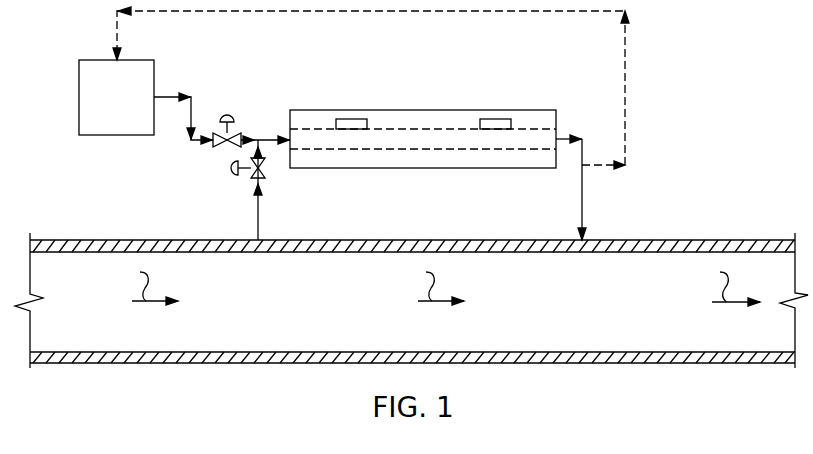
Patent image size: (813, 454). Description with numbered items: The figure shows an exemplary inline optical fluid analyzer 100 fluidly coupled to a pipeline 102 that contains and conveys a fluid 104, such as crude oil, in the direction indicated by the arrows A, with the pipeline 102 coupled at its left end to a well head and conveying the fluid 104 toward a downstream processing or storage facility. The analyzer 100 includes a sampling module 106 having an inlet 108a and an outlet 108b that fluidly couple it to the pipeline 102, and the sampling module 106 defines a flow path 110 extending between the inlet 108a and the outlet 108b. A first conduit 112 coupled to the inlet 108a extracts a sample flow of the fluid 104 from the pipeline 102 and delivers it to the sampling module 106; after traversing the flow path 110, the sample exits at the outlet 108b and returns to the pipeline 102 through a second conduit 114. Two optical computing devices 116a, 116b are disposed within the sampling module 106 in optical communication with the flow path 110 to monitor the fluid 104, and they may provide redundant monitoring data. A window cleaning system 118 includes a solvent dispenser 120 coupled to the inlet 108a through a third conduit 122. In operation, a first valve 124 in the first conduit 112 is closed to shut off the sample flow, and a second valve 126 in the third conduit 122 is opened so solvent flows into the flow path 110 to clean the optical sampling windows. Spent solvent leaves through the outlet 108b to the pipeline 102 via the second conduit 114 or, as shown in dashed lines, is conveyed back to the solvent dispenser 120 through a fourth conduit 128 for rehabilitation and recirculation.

The inline optical fluid analyzer 100 is at (651, 121).
The pipeline 102 is at (690, 240).
The fluid 104 is at (272, 304).
The sampling module 106 is at (461, 110).
The inlet 108a is at (289, 135).
The outlet 108b is at (558, 132).
The flow path 110 is at (430, 150).
The first conduit 112 is at (257, 207).
The second conduit 114 is at (582, 196).
The first optical computing device 116a is at (367, 124).
The second optical computing device 116b is at (511, 124).
The window cleaning system 118 is at (223, 81).
The solvent dispenser 120 is at (101, 108).
The third conduit 122 is at (173, 95).
The first valve 124 is at (264, 180).
The second valve 126 is at (213, 148).
The fourth conduit 128 is at (627, 61).